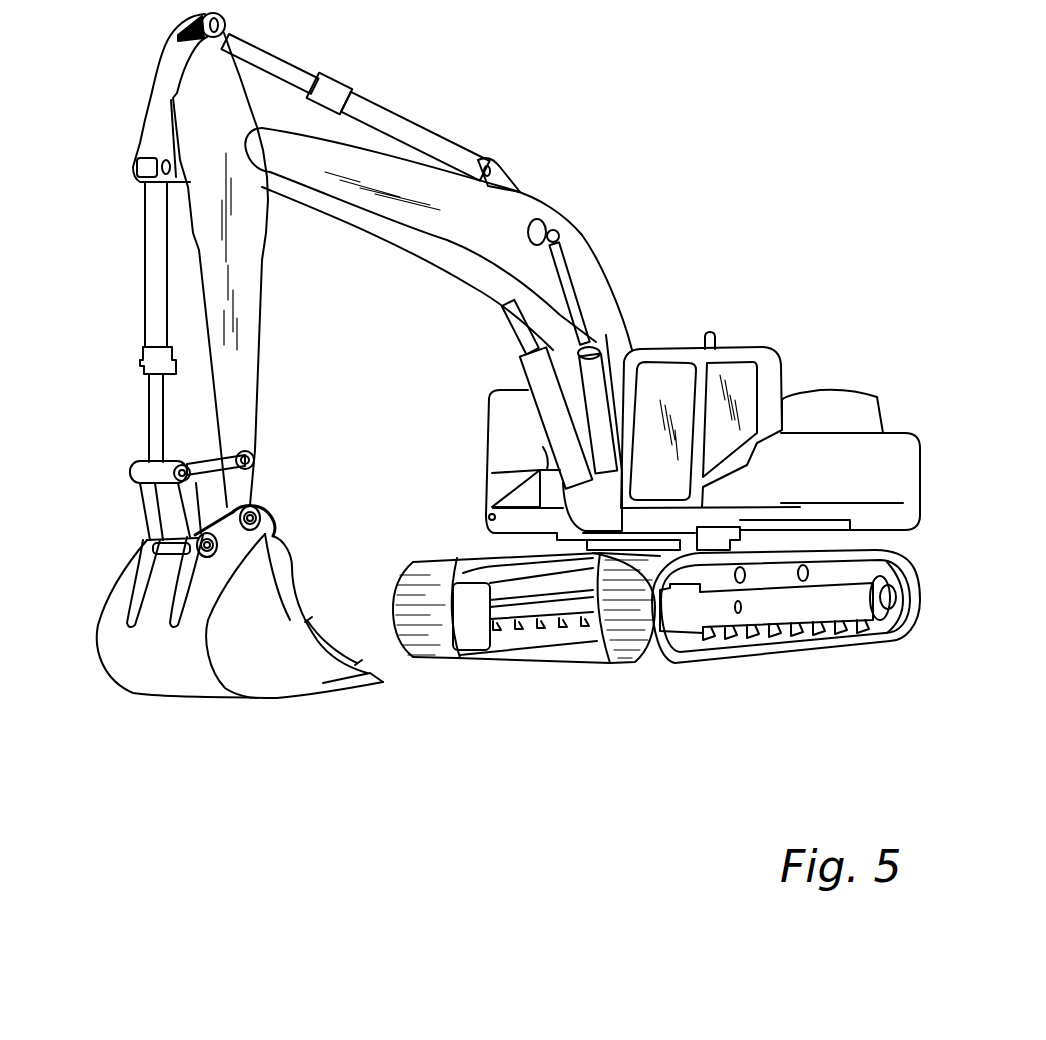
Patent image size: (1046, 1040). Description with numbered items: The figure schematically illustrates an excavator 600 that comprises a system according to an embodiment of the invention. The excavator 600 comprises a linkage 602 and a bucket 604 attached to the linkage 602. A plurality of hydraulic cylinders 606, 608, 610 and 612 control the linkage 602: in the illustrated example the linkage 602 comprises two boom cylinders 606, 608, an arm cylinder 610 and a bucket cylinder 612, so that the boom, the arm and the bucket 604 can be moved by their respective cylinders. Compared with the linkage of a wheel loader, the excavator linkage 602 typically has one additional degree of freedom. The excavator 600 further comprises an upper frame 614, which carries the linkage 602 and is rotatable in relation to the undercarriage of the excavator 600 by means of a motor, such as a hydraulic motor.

The excavator 600 is at (810, 203).
The linkage 602 is at (386, 252).
The bucket 604 is at (206, 706).
The boom cylinder 606 is at (565, 272).
The boom cylinder 608 is at (518, 371).
The arm cylinder 610 is at (403, 127).
The bucket cylinder 612 is at (146, 352).
The upper frame 614 is at (845, 458).